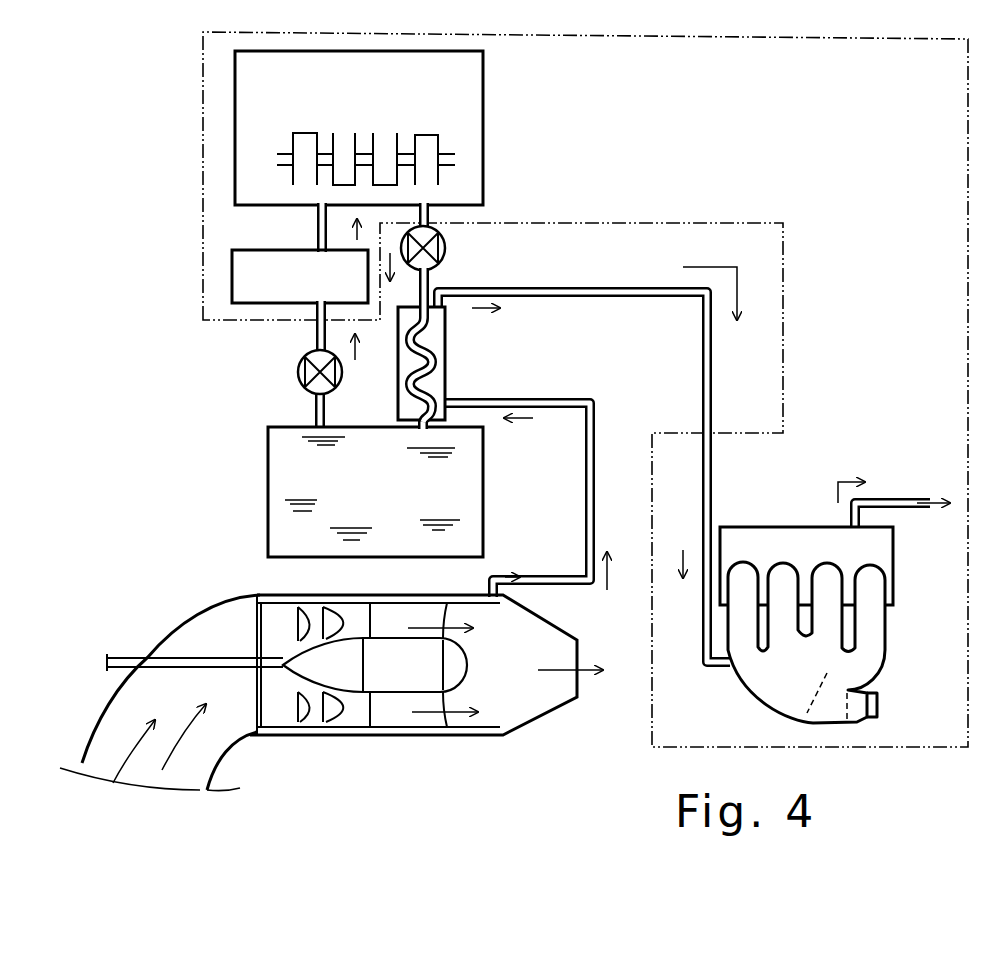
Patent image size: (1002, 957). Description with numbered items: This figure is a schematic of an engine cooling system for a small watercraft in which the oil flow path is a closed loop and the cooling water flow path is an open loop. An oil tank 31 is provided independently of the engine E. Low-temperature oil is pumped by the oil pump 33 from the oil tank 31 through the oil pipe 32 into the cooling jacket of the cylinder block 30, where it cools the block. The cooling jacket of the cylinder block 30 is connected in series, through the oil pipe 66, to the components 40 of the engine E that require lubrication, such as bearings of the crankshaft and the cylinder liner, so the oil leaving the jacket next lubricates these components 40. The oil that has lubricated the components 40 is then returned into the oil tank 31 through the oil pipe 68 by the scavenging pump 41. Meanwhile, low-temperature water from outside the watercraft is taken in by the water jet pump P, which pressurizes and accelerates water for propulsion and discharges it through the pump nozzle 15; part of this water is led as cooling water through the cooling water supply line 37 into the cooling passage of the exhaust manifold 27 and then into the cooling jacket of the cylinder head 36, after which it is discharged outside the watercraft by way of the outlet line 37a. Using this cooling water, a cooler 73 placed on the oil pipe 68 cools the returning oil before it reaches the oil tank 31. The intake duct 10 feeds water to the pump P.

The engine E is at (200, 92).
The components of the engine 40 is at (483, 112).
The oil pipe 66 is at (318, 225).
The cylinder block 30 is at (232, 272).
The oil pipe 32 is at (315, 333).
The oil pump 33 is at (300, 375).
The oil tank 31 is at (268, 480).
The scavenging pump 41 is at (448, 248).
The oil pipe 68 is at (413, 290).
The cooler 73 is at (447, 355).
The exhaust gas pipe 37a is at (700, 363).
The cooling water supply line 37 is at (597, 423).
The cylinder head 36 is at (792, 527).
The exhaust manifold 27 is at (857, 652).
The pump nozzle 15 is at (542, 720).
The water jet pump P is at (383, 735).
The intake probe 10 is at (118, 656).